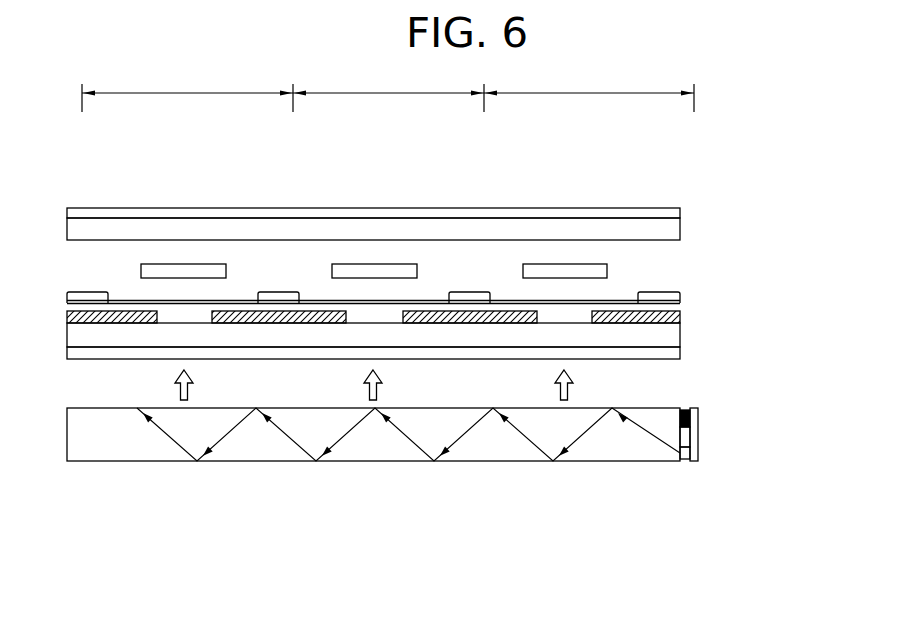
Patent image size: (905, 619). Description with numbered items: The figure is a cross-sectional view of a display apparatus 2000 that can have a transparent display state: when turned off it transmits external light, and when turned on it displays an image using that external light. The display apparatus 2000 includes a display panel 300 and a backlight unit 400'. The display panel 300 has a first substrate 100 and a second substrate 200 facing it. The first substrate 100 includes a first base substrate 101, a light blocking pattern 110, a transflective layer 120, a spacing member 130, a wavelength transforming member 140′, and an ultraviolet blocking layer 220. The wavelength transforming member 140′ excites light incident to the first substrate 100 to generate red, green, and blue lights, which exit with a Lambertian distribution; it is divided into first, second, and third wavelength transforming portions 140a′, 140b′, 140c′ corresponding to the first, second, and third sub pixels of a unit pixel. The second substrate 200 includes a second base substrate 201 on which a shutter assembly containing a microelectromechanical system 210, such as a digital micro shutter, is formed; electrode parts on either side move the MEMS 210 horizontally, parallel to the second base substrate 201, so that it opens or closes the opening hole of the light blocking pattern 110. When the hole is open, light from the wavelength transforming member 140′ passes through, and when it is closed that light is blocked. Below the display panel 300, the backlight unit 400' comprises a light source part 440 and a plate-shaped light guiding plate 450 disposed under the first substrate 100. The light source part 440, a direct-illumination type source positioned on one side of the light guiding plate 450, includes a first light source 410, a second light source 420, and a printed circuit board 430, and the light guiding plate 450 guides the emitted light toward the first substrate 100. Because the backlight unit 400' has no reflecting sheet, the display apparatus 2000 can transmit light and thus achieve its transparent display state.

The display apparatus 2000 is at (222, 172).
The display panel 300 is at (782, 197).
The second substrate 200 is at (737, 197).
The ultraviolet (UV) blocking layer 220 is at (680, 212).
The second base substrate 201 is at (680, 232).
The microelectromechanical systems (MEMS) 210 is at (600, 270).
The first substrate 100 is at (737, 285).
The spacing member 130 is at (680, 297).
The light blocking pattern 110 is at (680, 317).
The wavelength transforming member 140′ is at (522, 522).
The first wavelength transforming portion 140a′ is at (203, 318).
The second wavelength transforming portion 140b′ is at (360, 318).
The third wavelength transforming portion 140c′ is at (548, 318).
The first base substrate 101 is at (680, 337).
The transflective layer 120 is at (680, 355).
The backlight unit 400' is at (449, 450).
The light guiding plate 450 is at (67, 447).
The light source part 440 is at (758, 383).
The second light source 420 is at (683, 410).
The first light source 410 is at (690, 437).
The printed circuit board 430 is at (696, 461).